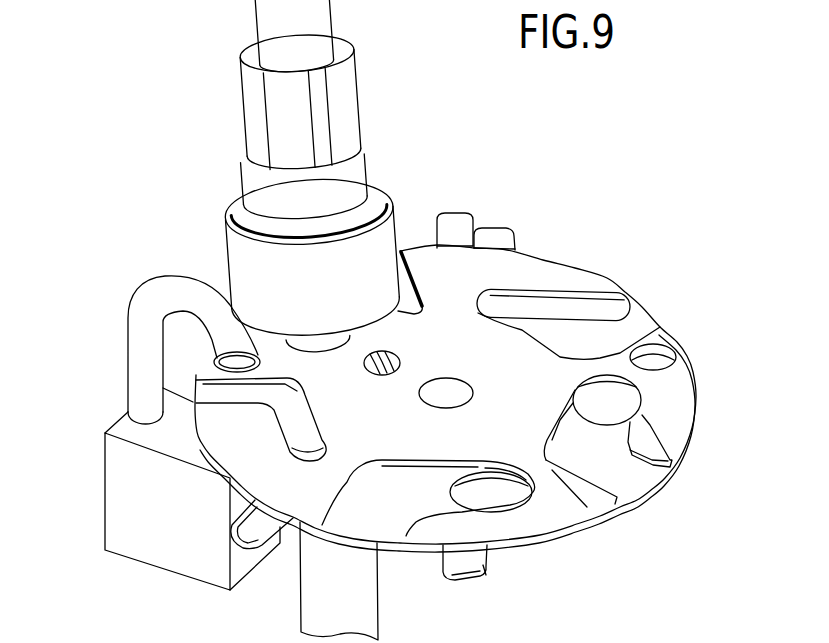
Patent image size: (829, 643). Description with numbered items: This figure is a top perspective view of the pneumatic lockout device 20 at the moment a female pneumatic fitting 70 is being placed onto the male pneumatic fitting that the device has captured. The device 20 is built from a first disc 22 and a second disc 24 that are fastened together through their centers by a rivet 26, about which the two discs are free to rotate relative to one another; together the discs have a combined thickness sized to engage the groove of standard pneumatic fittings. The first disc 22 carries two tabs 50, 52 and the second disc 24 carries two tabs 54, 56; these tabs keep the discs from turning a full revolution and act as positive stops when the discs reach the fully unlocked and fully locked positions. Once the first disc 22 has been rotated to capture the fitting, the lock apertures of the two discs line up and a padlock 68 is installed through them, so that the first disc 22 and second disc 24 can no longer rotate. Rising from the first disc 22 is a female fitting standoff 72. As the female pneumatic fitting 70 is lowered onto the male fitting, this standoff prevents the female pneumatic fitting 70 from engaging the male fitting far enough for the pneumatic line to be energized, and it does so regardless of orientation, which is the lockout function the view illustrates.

The pneumatic lockout device 20 is at (601, 233).
The first disc 22 is at (532, 280).
The second disc 24 is at (590, 340).
The rivet 26 is at (455, 402).
The tab 50 is at (243, 528).
The tab 52 is at (453, 222).
The tab 54 is at (473, 562).
The tab 56 is at (488, 236).
The padlock 68 is at (138, 309).
The female pneumatic fitting 70 is at (248, 120).
The female fitting standoff 72 is at (398, 365).